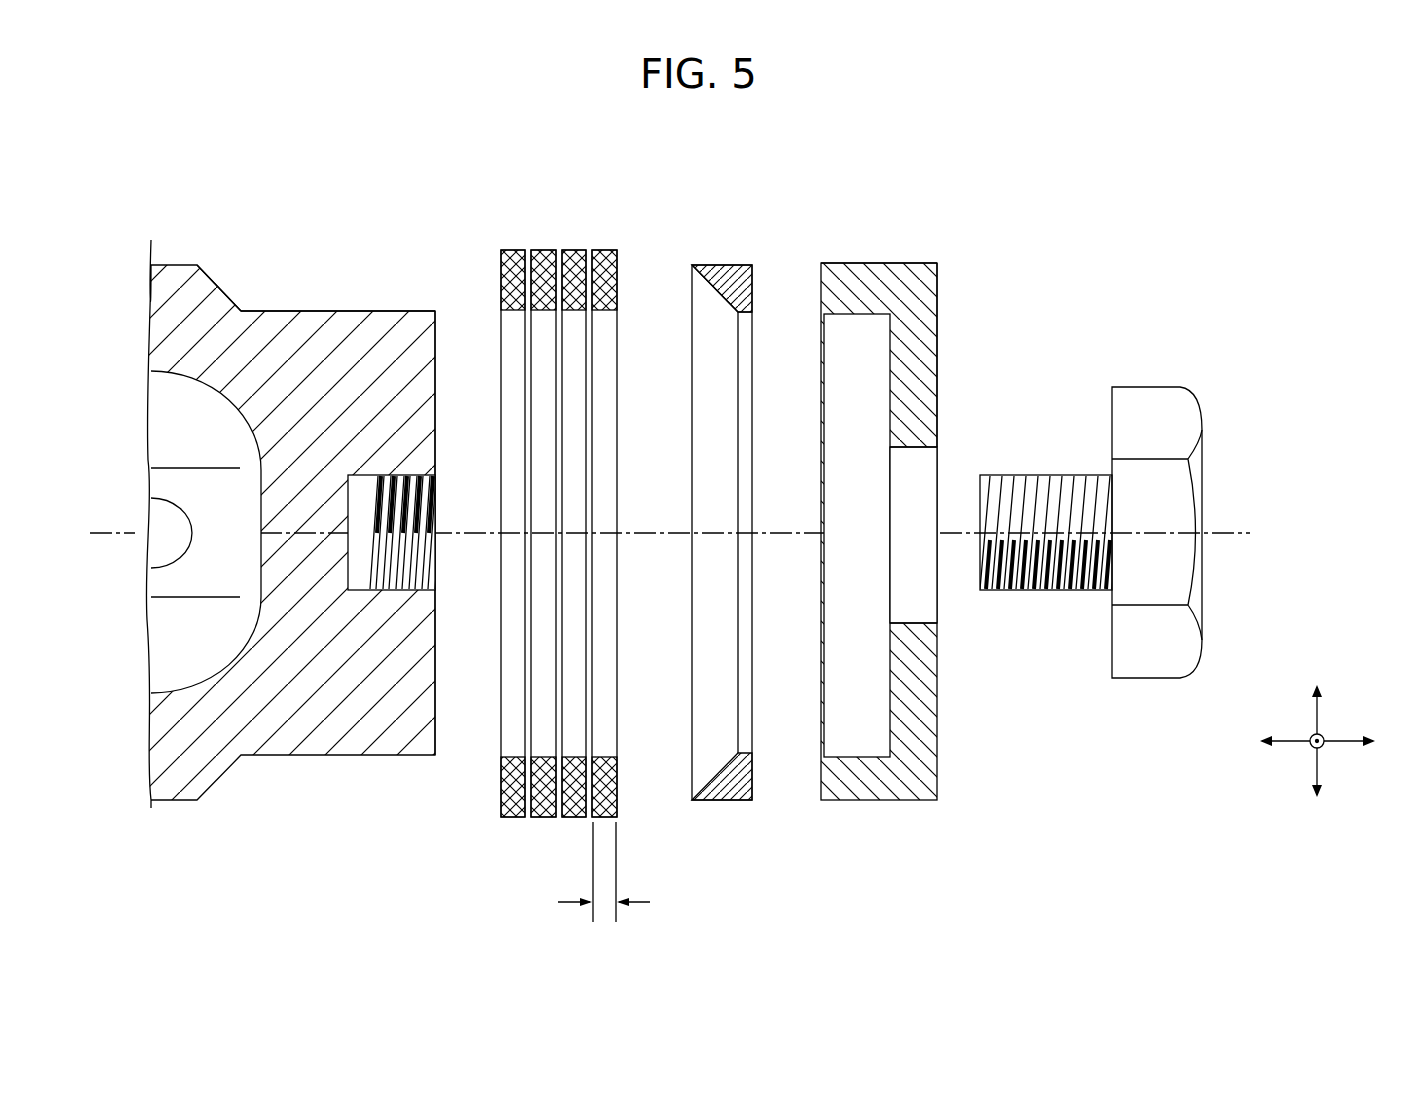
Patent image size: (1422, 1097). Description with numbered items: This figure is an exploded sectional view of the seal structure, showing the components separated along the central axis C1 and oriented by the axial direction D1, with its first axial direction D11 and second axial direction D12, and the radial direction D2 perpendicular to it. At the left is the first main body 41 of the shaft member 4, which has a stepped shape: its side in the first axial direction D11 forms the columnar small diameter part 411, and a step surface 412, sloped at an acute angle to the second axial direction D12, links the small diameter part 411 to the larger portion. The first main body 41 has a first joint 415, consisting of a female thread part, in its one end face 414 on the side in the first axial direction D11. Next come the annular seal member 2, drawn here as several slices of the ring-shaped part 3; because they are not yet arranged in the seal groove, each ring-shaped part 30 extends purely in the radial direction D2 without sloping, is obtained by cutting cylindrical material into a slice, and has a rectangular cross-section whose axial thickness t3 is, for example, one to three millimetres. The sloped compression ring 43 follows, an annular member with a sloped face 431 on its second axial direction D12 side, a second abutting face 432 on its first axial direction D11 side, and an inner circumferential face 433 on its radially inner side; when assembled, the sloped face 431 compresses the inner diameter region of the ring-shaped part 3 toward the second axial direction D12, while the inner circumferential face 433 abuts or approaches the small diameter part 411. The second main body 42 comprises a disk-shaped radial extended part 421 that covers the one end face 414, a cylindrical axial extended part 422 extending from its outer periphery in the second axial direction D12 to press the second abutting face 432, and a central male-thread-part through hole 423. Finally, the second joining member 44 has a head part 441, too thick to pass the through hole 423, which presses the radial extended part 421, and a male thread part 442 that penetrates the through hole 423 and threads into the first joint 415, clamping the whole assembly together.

The annular seal member 2 is at (549, 195).
The ring-shaped part 3 is at (553, 560).
The ring-shaped part 30 is at (604, 252).
The shaft member 4 is at (320, 195).
The first main body 41 is at (168, 240).
The small diameter part 411 is at (357, 310).
The step surface 412 is at (222, 284).
The one end face 414 is at (440, 320).
The first joint 415 is at (417, 582).
The second main body 42 is at (923, 485).
The radial extended part 421 is at (928, 303).
The axial extended part 422 is at (860, 263).
The male-thread-part through hole 423 is at (932, 603).
The sloped compression ring 43 is at (736, 485).
The sloped face 431 is at (713, 293).
The second abutting face 432 is at (755, 273).
The inner circumferential face 433 is at (750, 322).
The second joining member 44 is at (1091, 543).
The head part 441 is at (1137, 670).
The male thread part 442 is at (1058, 478).
The central axis C1 is at (100, 528).
The thickness t3 is at (604, 872).
The axial direction D1 is at (1338, 745).
The radial direction D2 is at (1318, 722).
The first axial direction D11 is at (1401, 742).
The second axial direction D12 is at (1233, 742).